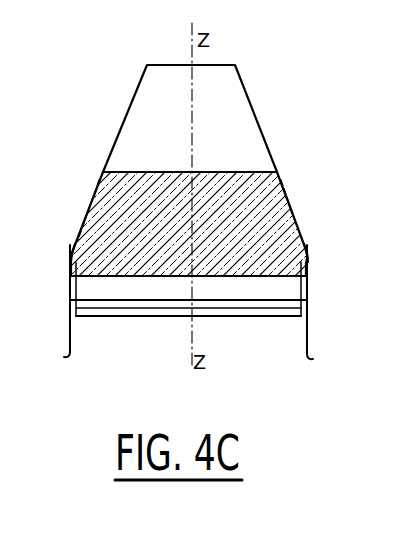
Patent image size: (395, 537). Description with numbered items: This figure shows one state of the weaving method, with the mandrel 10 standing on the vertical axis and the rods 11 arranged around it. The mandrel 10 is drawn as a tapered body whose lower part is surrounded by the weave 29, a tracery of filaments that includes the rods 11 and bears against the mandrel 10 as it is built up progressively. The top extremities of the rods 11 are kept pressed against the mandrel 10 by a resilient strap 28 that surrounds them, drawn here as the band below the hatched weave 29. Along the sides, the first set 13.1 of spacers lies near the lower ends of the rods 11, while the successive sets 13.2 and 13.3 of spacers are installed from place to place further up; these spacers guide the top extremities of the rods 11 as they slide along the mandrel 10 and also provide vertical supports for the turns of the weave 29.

The mandrel 10 is at (235, 97).
The rods 11 is at (70, 341).
The first set of spacers 13.1 is at (75, 282).
The second set of spacers 13.2 is at (72, 256).
The third set of spacers 13.3 is at (85, 212).
The resilient strap 28 is at (134, 305).
The weave 29 is at (237, 190).